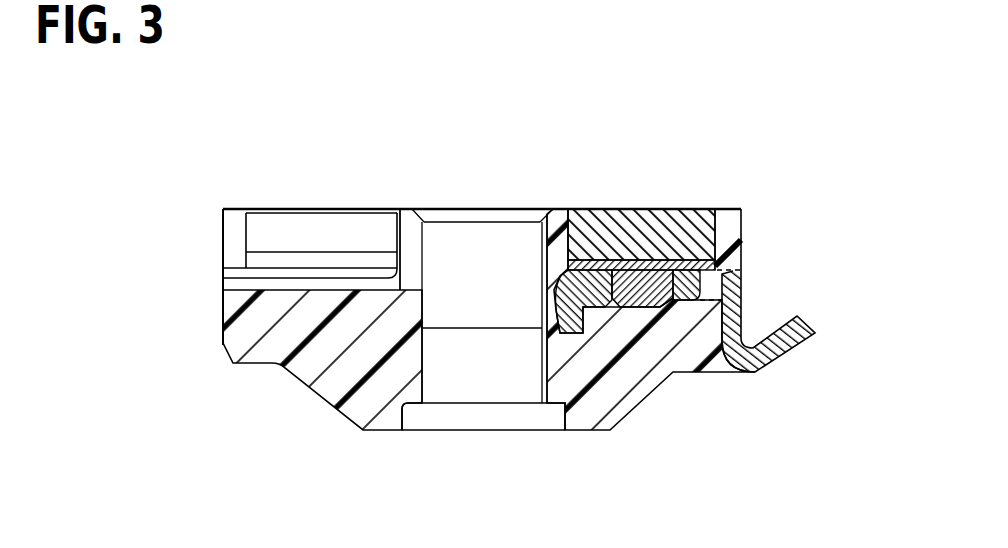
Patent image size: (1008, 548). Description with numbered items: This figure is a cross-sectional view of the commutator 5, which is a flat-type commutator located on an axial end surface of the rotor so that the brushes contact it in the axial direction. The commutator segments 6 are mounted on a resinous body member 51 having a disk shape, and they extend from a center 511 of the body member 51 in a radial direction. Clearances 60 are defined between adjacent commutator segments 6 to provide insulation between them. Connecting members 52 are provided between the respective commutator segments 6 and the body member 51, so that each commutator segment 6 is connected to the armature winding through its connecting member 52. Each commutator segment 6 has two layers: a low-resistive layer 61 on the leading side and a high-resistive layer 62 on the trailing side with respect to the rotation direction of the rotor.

The commutator 5 is at (768, 399).
The body member 51 is at (627, 372).
The center 511 is at (483, 375).
The connecting member 52 is at (815, 325).
The commutator segment 6 is at (616, 195).
The clearance 60 is at (263, 230).
The low-resistive layer 61 is at (630, 237).
The high-resistive layer 62 is at (635, 296).